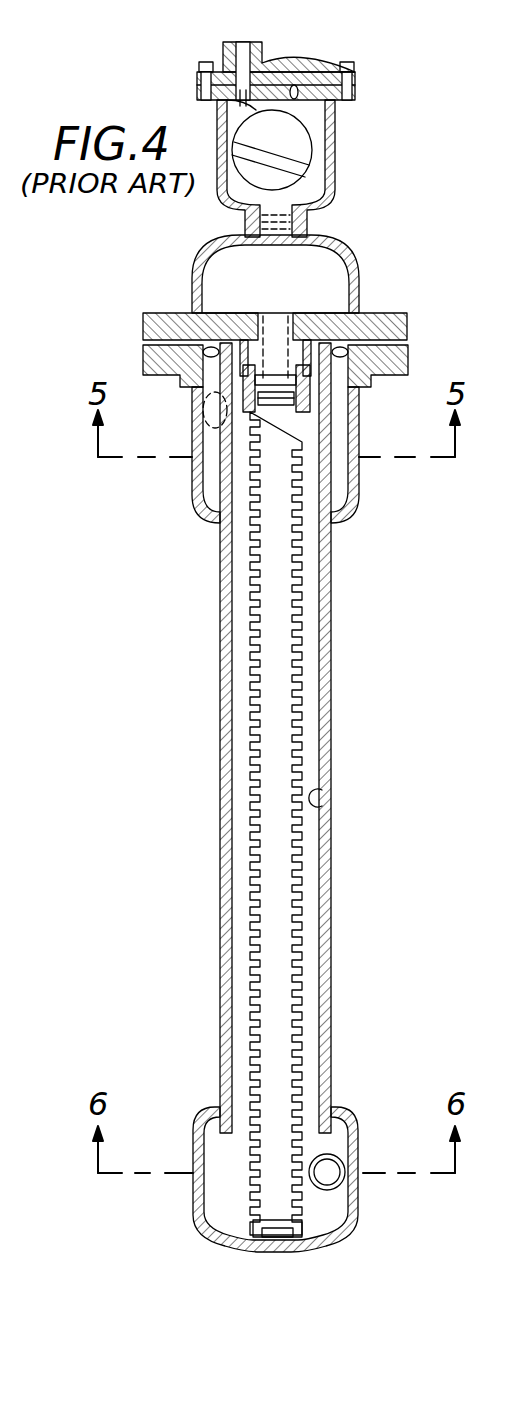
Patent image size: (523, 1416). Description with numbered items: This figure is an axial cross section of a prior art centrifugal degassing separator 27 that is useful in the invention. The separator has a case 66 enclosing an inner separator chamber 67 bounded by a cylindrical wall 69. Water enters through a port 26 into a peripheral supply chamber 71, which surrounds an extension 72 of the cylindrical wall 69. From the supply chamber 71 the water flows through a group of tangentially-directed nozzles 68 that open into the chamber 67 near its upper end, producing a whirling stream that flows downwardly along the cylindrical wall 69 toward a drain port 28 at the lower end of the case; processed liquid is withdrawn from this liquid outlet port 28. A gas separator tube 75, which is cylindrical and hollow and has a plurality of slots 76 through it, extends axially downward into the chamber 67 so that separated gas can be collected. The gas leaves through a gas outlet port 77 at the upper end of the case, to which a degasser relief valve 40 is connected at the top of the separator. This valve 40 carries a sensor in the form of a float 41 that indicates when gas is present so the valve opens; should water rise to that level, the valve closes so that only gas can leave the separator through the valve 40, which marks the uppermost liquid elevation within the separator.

The degasser relief valve 40 is at (296, 57).
The float 41 is at (312, 142).
The gas outlet port 77 is at (288, 325).
The extension of wall 72 is at (385, 363).
The peripheral supply chamber 71 is at (338, 422).
The tangentially-directed nozzles 68 is at (223, 457).
The port 26 is at (200, 392).
The inner separator chamber 67 is at (245, 765).
The case 66 is at (331, 663).
The gas separator tube 75 is at (301, 718).
The centrifugal degassing separator 27 is at (335, 762).
The cylindrical wall 69 is at (322, 806).
The drain port 28 is at (331, 1178).
The slots 76 is at (509, 298).